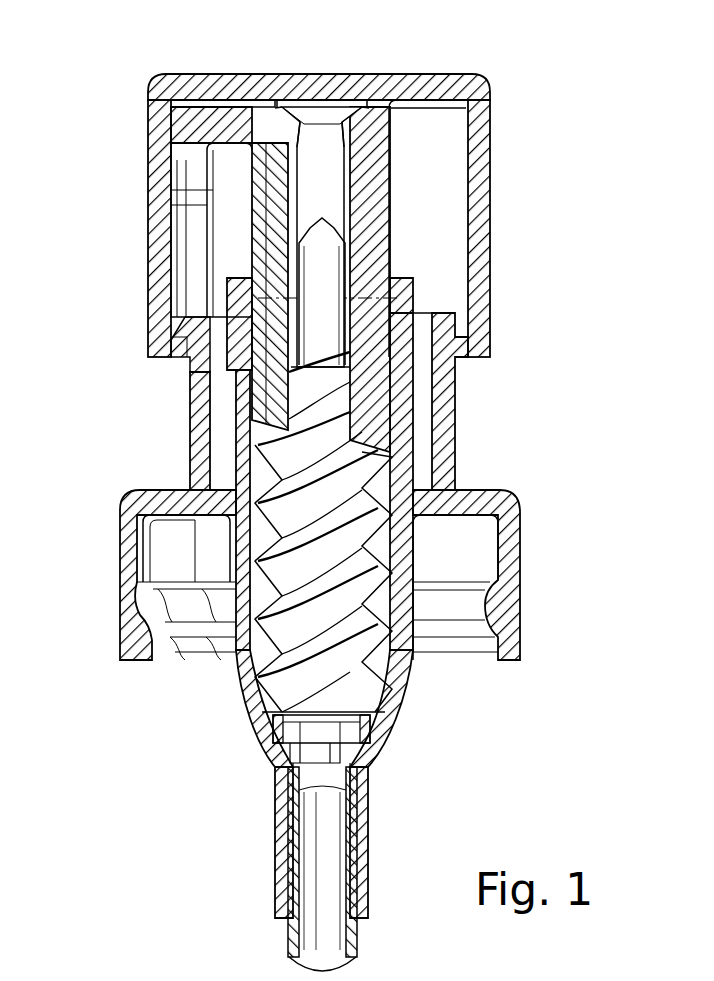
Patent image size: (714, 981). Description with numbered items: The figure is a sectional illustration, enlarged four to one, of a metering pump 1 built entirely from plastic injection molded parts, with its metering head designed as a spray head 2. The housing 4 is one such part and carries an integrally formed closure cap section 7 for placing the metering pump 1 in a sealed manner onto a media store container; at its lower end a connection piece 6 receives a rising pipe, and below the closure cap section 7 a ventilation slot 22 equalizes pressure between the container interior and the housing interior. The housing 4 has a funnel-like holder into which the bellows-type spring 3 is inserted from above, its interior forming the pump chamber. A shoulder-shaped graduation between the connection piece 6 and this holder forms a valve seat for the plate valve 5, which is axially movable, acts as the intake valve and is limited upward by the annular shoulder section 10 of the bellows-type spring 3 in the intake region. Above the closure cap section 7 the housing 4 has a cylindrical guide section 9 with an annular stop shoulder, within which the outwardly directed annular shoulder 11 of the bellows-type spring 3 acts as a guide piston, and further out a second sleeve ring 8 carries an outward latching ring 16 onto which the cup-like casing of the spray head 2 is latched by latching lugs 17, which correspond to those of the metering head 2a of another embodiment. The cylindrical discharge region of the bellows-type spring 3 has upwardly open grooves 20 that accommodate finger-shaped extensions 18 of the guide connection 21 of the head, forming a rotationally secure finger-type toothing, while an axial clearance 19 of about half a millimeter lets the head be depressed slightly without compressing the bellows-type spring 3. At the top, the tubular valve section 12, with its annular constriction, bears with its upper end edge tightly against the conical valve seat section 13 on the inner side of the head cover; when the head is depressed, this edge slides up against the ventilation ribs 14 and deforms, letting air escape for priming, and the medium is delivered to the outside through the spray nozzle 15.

The metering pump 1 is at (548, 391).
The spray head 2 is at (482, 165).
The metering head 2a is at (205, 967).
The bellows-type spring 3 is at (283, 452).
The housing 4 is at (262, 760).
The plate valve 5 is at (345, 738).
The connection piece 6 is at (362, 835).
The closure cap section 7 is at (500, 610).
The second sleeve ring 8 is at (195, 410).
The cylindrical guide section 9 is at (415, 292).
The annular shoulder section 10 is at (394, 707).
The annular shoulder 11 is at (418, 310).
The tubular valve section 12 is at (358, 117).
The conical valve seat section 13 is at (347, 108).
The ventilation ribs 14 is at (362, 110).
The spray nozzle 15 is at (135, 155).
The latching ring 16 is at (170, 316).
The latching lug 17 is at (96, 967).
The finger-shaped extensions 18 is at (395, 252).
The axial clearance 19 is at (390, 220).
The grooves 20 is at (252, 272).
The guide connection 21 is at (250, 185).
The ventilation slot 22 is at (240, 650).